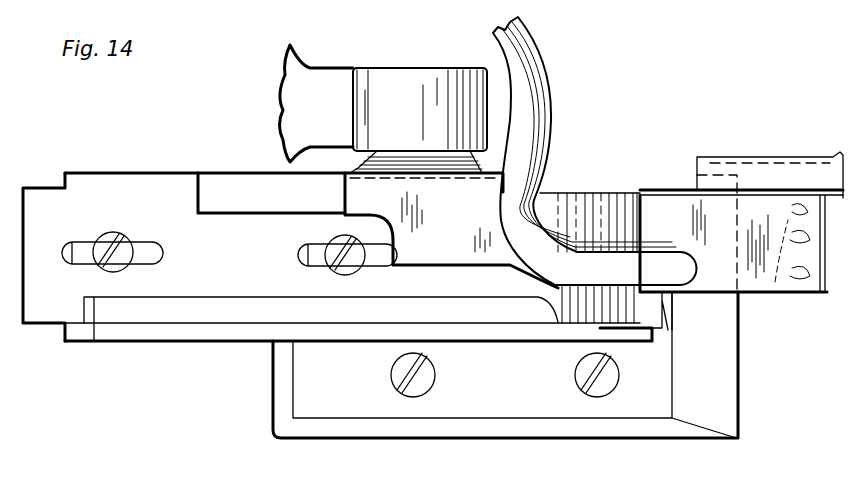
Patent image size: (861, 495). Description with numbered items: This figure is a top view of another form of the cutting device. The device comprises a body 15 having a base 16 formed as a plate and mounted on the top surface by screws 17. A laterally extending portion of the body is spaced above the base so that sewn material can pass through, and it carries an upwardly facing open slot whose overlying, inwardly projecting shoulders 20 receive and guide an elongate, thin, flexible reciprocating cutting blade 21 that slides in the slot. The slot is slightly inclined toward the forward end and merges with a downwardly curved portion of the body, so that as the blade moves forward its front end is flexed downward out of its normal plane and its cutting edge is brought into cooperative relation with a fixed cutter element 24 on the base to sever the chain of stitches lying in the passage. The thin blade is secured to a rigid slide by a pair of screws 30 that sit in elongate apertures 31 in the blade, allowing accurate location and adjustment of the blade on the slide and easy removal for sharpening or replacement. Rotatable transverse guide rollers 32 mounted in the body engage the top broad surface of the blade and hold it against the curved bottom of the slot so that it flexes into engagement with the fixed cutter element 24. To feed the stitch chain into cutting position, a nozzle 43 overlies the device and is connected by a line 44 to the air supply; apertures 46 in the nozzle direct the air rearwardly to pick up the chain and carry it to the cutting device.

The body 15 is at (102, 167).
The base 16 is at (560, 412).
The screws 17 is at (425, 372).
The shoulders 20 is at (219, 186).
The cutting blade 21 is at (40, 200).
The fixed cutter element 24 is at (655, 311).
The screws 30 is at (108, 241).
The elongate apertures 31 is at (156, 259).
The guide rollers 32 is at (620, 307).
The nozzle 43 is at (717, 260).
The line 44 is at (528, 160).
The apertures 46 is at (784, 255).